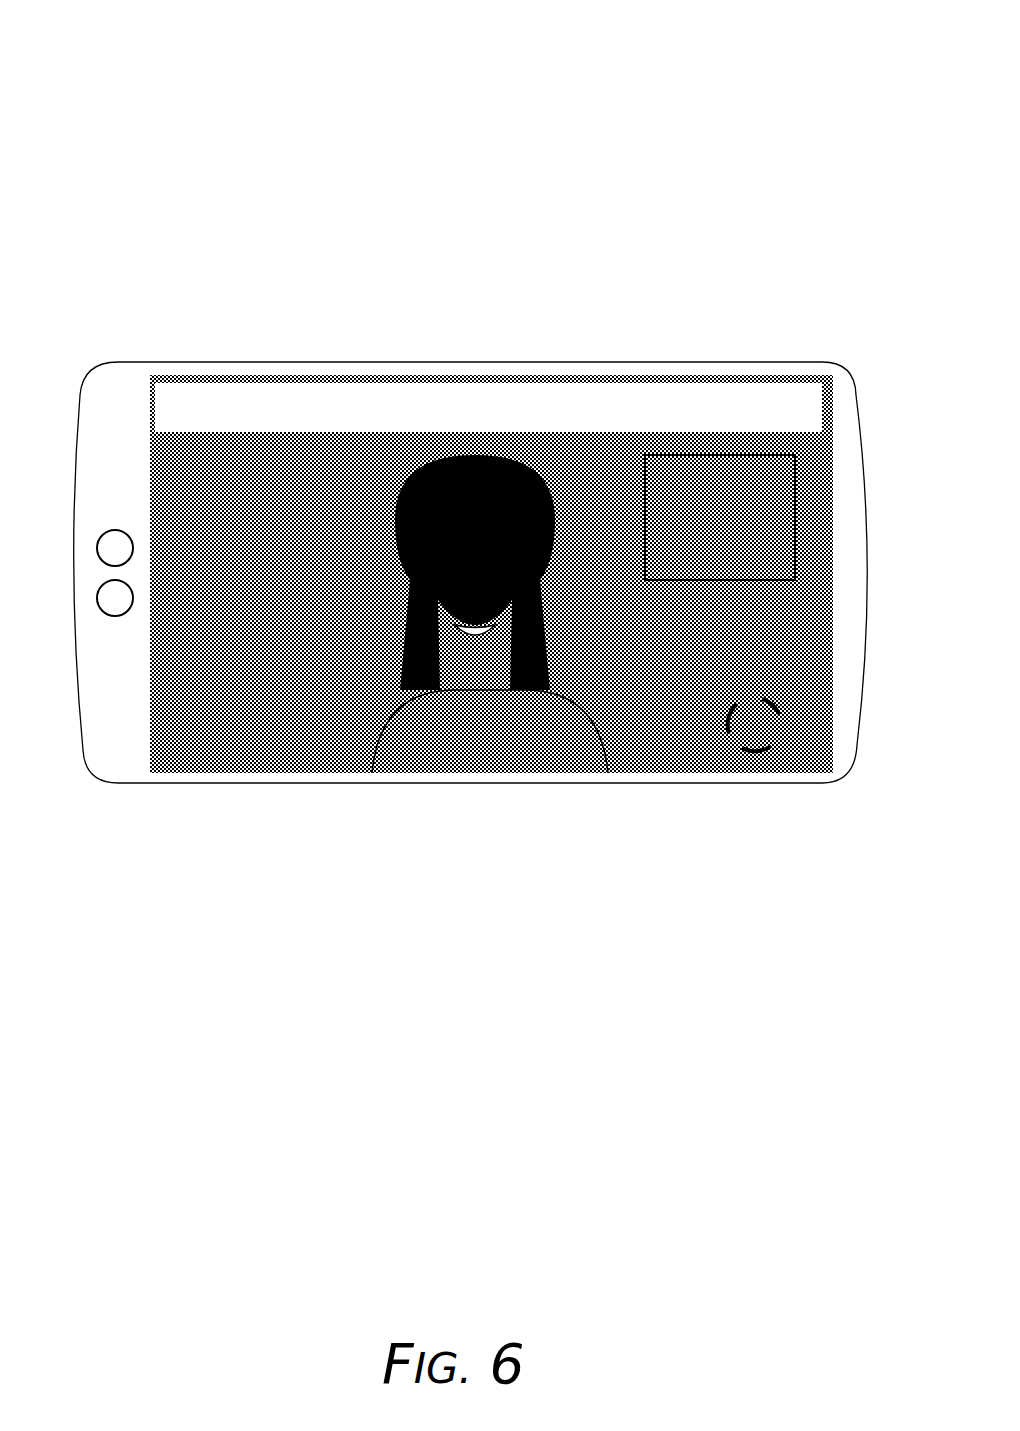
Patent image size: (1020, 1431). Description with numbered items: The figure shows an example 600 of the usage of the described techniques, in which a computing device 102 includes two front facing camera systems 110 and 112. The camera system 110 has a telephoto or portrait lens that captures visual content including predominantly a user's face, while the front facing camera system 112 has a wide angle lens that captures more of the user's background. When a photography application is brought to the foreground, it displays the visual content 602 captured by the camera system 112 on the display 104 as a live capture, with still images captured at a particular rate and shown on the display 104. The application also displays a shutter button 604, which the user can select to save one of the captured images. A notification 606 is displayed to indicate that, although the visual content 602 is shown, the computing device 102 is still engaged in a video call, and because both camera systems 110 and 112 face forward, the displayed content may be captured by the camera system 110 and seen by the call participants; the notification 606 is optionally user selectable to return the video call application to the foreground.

The example 600 is at (799, 78).
The computing device 102 is at (176, 361).
The display 104 is at (250, 374).
The notification 606 is at (492, 380).
The visual content 602 is at (297, 774).
The shutter button 604 is at (752, 757).
The camera system 110 is at (115, 617).
The front facing camera system 112 is at (115, 528).